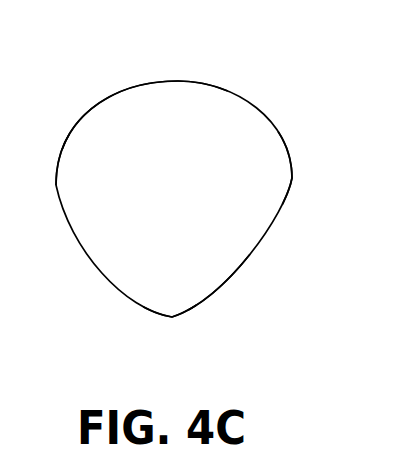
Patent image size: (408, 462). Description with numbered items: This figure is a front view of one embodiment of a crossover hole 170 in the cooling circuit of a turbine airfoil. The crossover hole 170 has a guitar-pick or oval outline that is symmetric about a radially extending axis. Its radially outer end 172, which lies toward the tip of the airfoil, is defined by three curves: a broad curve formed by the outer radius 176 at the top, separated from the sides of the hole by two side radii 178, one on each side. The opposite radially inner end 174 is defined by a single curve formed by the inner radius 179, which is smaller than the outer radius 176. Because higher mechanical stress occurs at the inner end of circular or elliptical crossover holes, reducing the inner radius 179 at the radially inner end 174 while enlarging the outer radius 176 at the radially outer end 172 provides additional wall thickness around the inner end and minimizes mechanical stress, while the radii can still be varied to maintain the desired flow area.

The crossover hole 170 is at (290, 102).
The radially outer end 172 is at (70, 128).
The radially inner end 174 is at (213, 301).
The outer radius 176 is at (135, 79).
The side radii 178 is at (66, 154).
The inner radius 179 is at (175, 331).